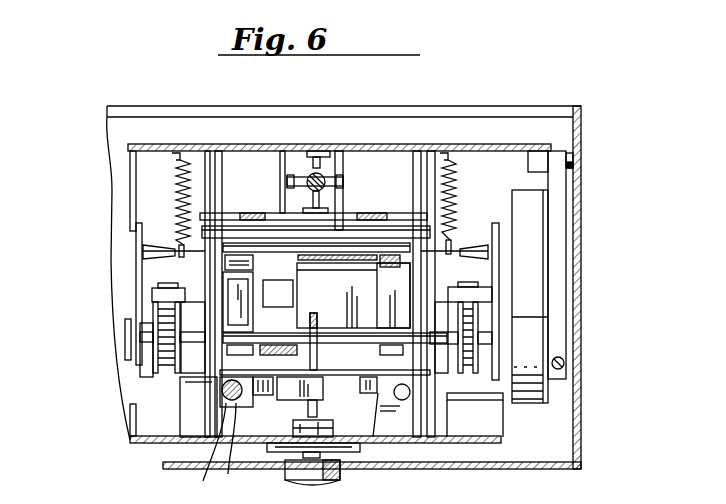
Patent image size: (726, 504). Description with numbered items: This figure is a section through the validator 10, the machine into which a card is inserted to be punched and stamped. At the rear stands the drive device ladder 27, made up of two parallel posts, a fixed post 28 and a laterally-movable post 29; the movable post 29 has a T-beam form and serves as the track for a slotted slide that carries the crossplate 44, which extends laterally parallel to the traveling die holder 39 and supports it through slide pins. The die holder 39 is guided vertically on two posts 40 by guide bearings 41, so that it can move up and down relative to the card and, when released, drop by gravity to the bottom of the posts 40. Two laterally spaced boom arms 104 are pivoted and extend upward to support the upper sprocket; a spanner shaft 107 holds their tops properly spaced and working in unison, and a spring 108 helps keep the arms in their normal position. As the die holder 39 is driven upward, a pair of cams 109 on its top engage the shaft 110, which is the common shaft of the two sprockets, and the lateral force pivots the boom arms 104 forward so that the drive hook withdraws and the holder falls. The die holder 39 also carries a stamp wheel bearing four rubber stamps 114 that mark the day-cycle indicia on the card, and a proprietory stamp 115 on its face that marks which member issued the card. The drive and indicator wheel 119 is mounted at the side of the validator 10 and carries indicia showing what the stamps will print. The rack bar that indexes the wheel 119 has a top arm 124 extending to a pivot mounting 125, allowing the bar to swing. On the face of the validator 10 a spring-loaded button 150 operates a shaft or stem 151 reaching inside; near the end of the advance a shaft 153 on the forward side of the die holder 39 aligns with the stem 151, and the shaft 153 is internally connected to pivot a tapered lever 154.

The validator 10 is at (583, 451).
The drive device ladder 27 is at (331, 143).
The fixed post 28 is at (308, 165).
The laterally-movable post 29 is at (316, 200).
The traveling die holder 39 is at (325, 365).
The posts 40 is at (234, 438).
The guide bearings 41 is at (208, 440).
The crossplate 44 is at (388, 210).
The boom arms 104 is at (138, 277).
The spanner shaft 107 is at (470, 243).
The spring 108 is at (178, 192).
The cams 109 is at (240, 353).
The shaft 110 is at (233, 338).
The rubber stamps 114 is at (291, 299).
The proprietory stamp 115 is at (367, 261).
The drive and indicator wheel 119 is at (541, 343).
The top arm 124 is at (563, 206).
The pivot mounting 125 is at (578, 162).
The button 150 is at (340, 478).
The shaft or stem 151 is at (330, 430).
The shaft 153 is at (308, 412).
The tapered lever 154 is at (319, 314).